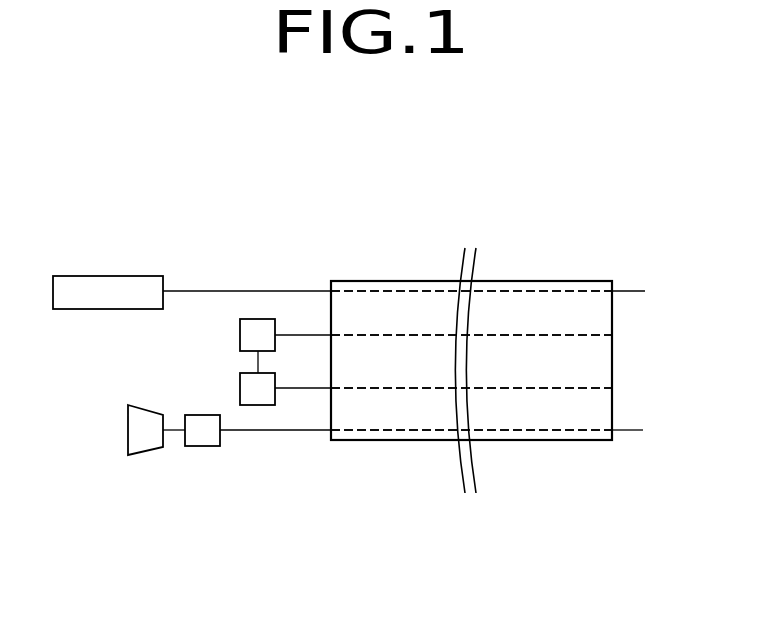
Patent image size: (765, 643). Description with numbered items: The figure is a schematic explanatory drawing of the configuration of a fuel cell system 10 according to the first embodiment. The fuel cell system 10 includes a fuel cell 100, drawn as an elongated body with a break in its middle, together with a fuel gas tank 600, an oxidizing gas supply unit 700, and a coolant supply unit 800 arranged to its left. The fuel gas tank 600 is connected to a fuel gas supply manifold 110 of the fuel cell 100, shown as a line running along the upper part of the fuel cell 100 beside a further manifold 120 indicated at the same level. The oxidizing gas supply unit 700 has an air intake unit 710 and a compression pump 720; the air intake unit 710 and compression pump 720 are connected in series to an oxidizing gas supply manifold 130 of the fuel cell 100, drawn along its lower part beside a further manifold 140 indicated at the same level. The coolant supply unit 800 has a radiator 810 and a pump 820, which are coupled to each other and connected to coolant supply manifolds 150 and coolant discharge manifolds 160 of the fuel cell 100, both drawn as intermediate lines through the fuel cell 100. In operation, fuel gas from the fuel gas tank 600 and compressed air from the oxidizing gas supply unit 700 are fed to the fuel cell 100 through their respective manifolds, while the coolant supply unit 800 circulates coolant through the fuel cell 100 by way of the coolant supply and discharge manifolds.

The fuel cell system 10 is at (147, 144).
The fuel cell 100 is at (600, 281).
The fuel gas supply manifold 110 is at (352, 291).
The cladding 120 is at (503, 291).
The oxidizing gas supply manifold 130 is at (353, 432).
The cladding 140 is at (527, 431).
The coolant supply manifold 150 is at (406, 388).
The coolant discharge manifold 160 is at (385, 335).
The fuel gas tank 600 is at (108, 276).
The oxidizing gas supply unit 700 is at (172, 481).
The air intake unit 710 is at (147, 456).
The compression pump 720 is at (204, 464).
The coolant supply unit 800 is at (181, 360).
The radiator 810 is at (240, 335).
The pump 820 is at (240, 386).